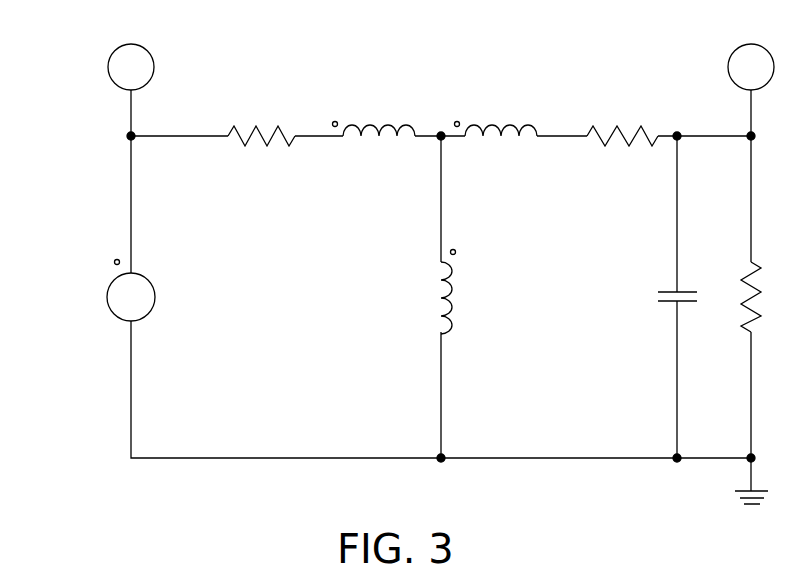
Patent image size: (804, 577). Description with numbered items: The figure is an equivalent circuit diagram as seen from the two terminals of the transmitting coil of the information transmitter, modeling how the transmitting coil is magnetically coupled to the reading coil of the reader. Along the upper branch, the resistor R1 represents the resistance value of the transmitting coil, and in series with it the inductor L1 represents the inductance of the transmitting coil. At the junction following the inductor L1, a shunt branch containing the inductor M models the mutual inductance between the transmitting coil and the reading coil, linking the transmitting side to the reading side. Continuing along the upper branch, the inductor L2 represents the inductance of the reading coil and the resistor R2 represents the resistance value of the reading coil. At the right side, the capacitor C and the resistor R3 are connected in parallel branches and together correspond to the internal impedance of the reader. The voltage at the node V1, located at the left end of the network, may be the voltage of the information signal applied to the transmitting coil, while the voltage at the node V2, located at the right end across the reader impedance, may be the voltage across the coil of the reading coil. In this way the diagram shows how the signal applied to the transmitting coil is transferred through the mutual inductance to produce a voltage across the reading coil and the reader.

The node V1 is at (131, 90).
The node V2 is at (751, 90).
The resistor R1 is at (261, 118).
The inductor L1 is at (374, 113).
The inductor L2 is at (496, 113).
The resistor R2 is at (622, 118).
The inductor M is at (460, 292).
The capacitor C is at (665, 301).
The resistor R3 is at (769, 297).